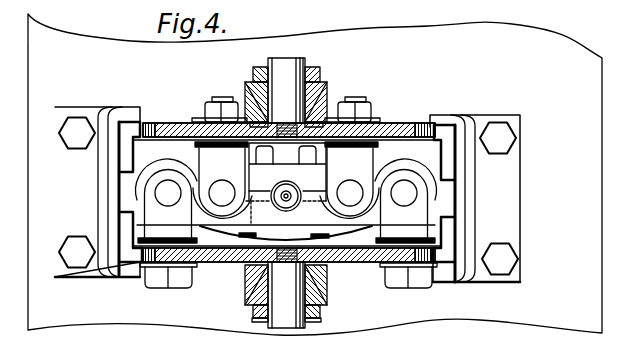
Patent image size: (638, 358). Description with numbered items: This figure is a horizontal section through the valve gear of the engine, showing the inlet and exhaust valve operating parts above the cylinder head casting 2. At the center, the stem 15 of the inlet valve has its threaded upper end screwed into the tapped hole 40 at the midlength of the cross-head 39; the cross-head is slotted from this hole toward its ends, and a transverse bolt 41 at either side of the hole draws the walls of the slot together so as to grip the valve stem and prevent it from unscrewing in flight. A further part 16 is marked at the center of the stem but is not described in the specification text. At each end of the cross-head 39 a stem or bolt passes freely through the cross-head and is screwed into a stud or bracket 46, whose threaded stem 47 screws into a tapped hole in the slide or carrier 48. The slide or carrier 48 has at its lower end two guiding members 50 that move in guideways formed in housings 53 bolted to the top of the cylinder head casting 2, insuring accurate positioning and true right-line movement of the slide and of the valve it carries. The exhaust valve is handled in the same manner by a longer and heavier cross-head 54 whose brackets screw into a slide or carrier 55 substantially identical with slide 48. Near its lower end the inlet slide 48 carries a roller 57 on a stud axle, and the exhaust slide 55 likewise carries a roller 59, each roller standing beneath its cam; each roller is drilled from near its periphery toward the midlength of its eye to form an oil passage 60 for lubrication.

The cylinder head casting 2 is at (557, 202).
The stem 15 is at (291, 186).
The pin center 16 is at (284, 199).
The cross-head 39 is at (287, 172).
The tapped hole 40 is at (301, 201).
The transverse bolt 41 is at (243, 243).
The stud or bracket 46 is at (286, 192).
The threaded stem 47 is at (214, 99).
The slide or carrier 48 is at (392, 125).
The guiding members 50 is at (133, 150).
The housings 53 is at (97, 268).
The cross-head 54 is at (182, 163).
The slide or carrier 55 is at (370, 264).
The roller 57 is at (327, 87).
The roller 59 is at (245, 293).
The oil passage 60 is at (245, 92).